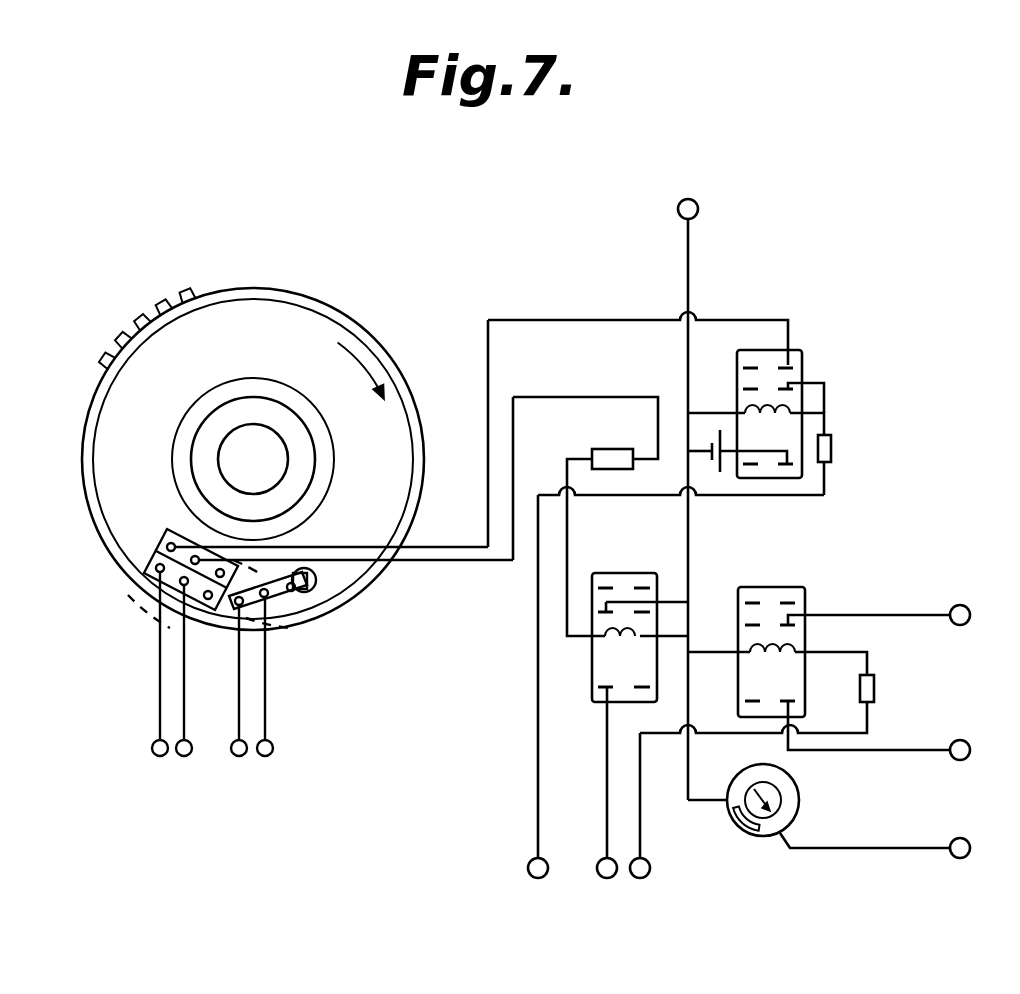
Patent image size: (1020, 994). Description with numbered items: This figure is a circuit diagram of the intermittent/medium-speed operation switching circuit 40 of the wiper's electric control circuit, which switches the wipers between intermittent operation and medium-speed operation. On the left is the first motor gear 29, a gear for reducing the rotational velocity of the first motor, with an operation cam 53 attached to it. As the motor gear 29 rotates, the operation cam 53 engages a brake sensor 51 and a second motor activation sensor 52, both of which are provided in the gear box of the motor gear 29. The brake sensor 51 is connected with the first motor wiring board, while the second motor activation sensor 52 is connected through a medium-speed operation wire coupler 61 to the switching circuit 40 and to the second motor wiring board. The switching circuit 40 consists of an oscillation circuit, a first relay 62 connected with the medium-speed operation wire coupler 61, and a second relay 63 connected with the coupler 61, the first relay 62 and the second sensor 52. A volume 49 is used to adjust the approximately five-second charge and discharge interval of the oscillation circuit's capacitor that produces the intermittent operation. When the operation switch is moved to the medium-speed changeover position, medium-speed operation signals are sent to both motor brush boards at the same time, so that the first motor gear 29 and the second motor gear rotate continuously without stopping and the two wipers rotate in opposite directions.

The motor gear 29 is at (338, 313).
The medium-speed operation wire coupler 61 is at (162, 540).
The second motor activation sensor 52 is at (150, 588).
The brake sensor 51 is at (289, 616).
The operation cam 53 is at (336, 588).
The intermittent/medium-speed operation switching circuit 40 is at (744, 538).
The first relay 62 is at (802, 358).
The second relay 63 is at (620, 573).
The volume 49 is at (800, 806).